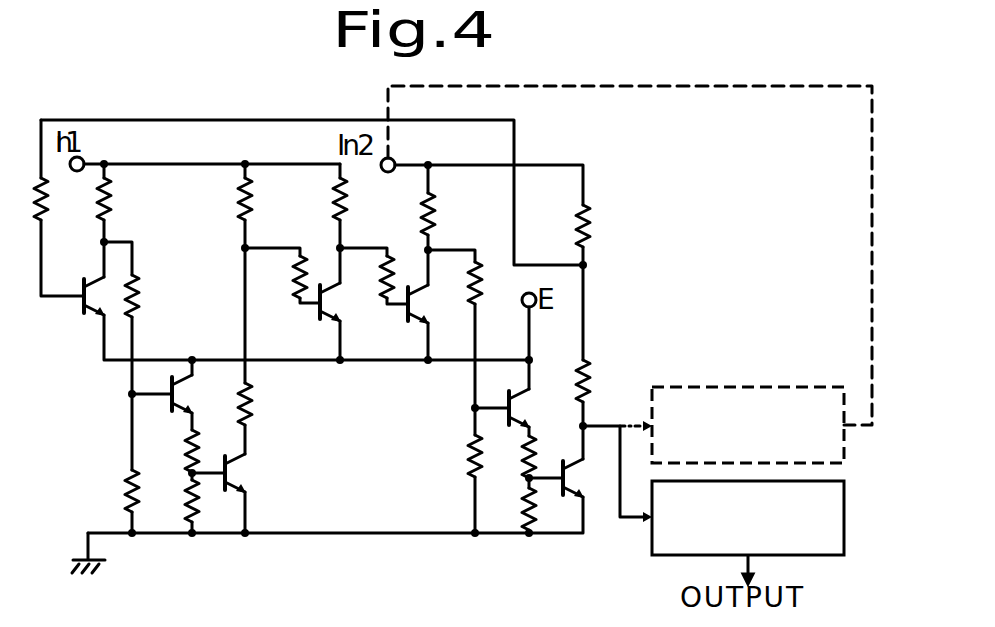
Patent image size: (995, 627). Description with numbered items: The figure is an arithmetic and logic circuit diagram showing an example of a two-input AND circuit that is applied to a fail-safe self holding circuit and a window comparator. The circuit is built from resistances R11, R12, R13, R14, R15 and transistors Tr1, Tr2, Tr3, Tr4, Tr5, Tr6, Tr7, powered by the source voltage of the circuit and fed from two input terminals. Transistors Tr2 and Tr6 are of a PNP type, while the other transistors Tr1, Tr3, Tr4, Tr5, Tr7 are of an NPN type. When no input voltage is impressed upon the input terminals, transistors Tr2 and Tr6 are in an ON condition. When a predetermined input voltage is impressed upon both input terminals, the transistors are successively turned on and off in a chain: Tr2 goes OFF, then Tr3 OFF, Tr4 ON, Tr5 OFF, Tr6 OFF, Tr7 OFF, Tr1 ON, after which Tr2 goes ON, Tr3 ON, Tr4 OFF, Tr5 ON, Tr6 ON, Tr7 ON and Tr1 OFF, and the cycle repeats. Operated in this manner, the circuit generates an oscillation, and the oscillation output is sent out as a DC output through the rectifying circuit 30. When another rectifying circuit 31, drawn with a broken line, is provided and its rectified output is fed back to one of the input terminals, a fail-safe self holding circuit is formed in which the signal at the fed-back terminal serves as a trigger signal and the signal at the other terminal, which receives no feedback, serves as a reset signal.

The rectifying circuit 30 is at (652, 556).
The rectifying circuit 31 is at (782, 388).
The resistance R11 is at (286, 206).
The resistance R12 is at (324, 301).
The resistance R13 is at (282, 473).
The resistance R14 is at (408, 212).
The resistance R15 is at (437, 395).
The transistor Tr1 is at (83, 309).
The transistor Tr2 is at (196, 394).
The transistor Tr3 is at (248, 474).
The transistor Tr4 is at (311, 313).
The transistor Tr5 is at (406, 318).
The transistor Tr6 is at (536, 409).
The transistor Tr7 is at (587, 478).